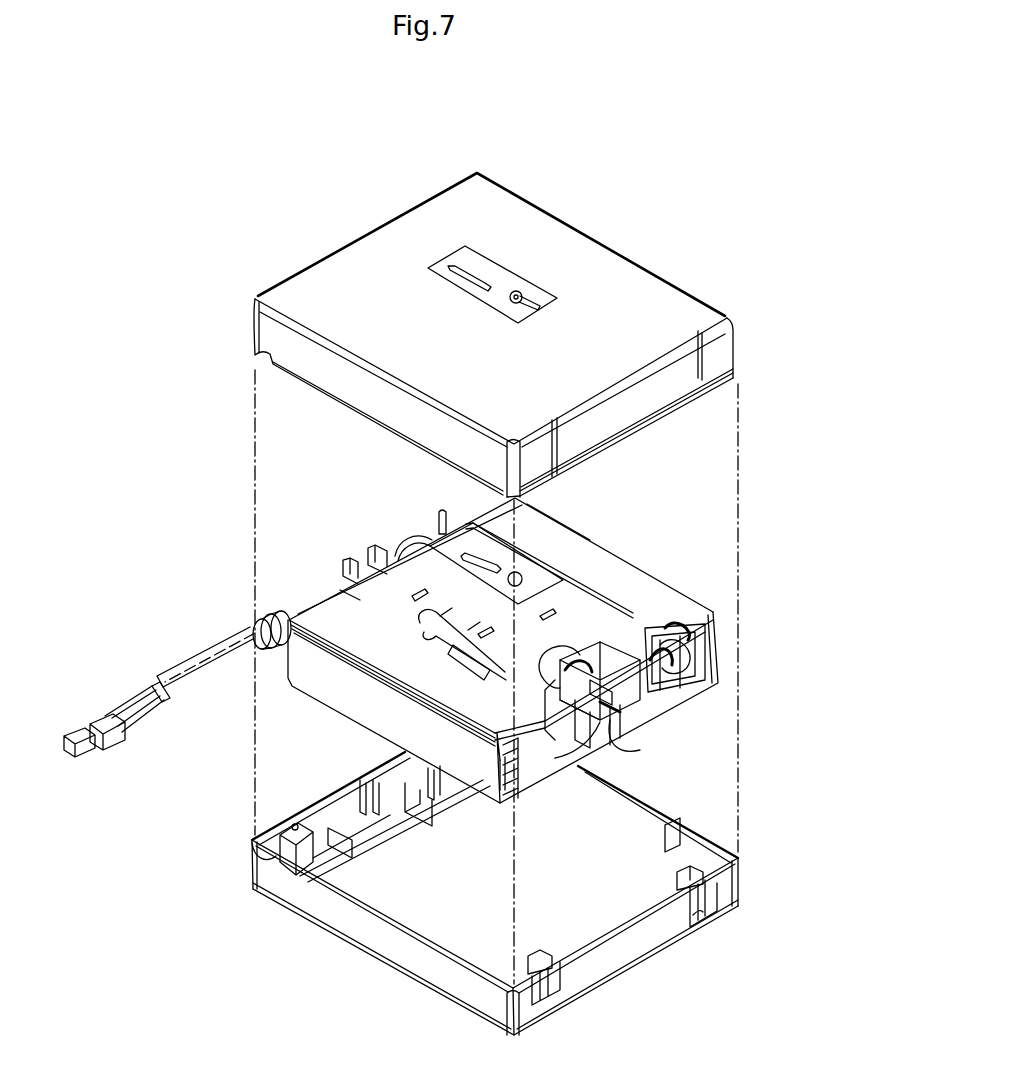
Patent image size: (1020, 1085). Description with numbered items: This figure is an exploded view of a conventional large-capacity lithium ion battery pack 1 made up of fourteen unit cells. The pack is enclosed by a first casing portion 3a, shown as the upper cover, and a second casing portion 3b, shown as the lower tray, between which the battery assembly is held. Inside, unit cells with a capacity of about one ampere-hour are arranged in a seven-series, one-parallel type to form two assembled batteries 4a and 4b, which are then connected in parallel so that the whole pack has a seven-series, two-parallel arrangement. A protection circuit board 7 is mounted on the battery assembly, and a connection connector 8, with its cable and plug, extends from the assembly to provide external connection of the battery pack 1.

The electronic device 1 is at (140, 142).
The first casing portion 3a is at (560, 243).
The second casing portion 3b is at (617, 958).
The assembled battery 4a is at (680, 693).
The assembled battery 4b is at (578, 752).
The protection circuit board 7 is at (578, 617).
The connection connector 8 is at (188, 668).